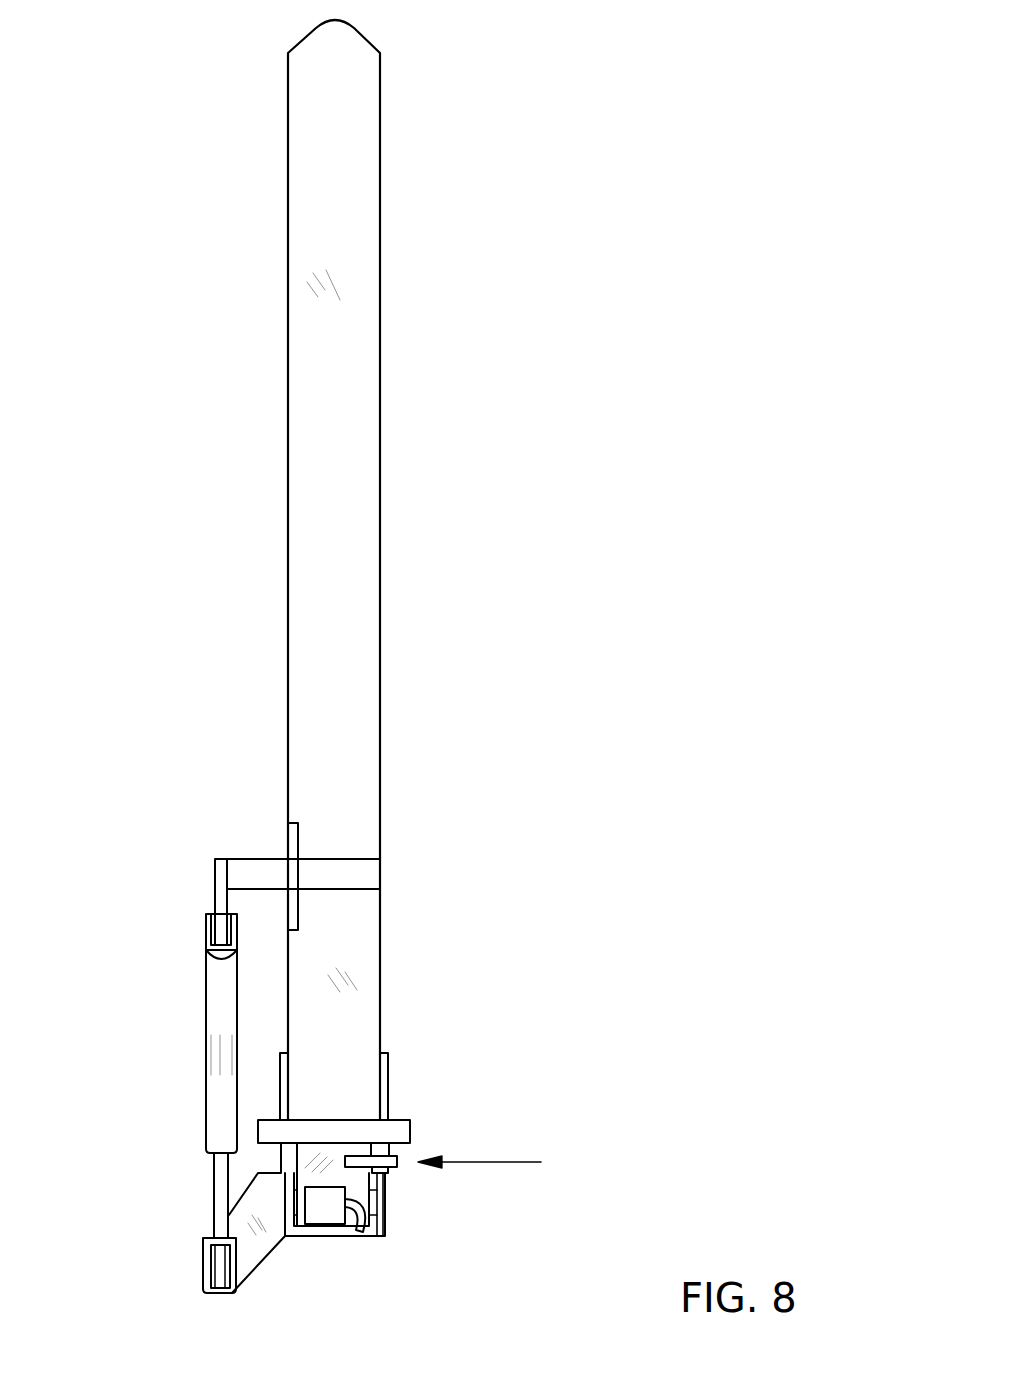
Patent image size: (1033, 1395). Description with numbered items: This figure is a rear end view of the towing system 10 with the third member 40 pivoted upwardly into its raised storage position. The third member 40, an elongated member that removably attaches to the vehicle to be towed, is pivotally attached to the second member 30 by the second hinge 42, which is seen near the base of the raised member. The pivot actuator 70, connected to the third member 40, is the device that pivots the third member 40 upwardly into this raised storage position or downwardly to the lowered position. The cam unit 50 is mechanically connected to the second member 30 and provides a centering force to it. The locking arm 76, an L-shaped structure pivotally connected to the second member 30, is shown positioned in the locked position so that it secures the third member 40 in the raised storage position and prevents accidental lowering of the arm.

The towing system 10 is at (396, 672).
The third member 40 is at (349, 557).
The cam unit 50 is at (389, 1073).
The pivot actuator 70 is at (206, 984).
The second member 30 is at (330, 1237).
The locking arm 76 is at (396, 1163).
The second hinge 42 is at (378, 1200).